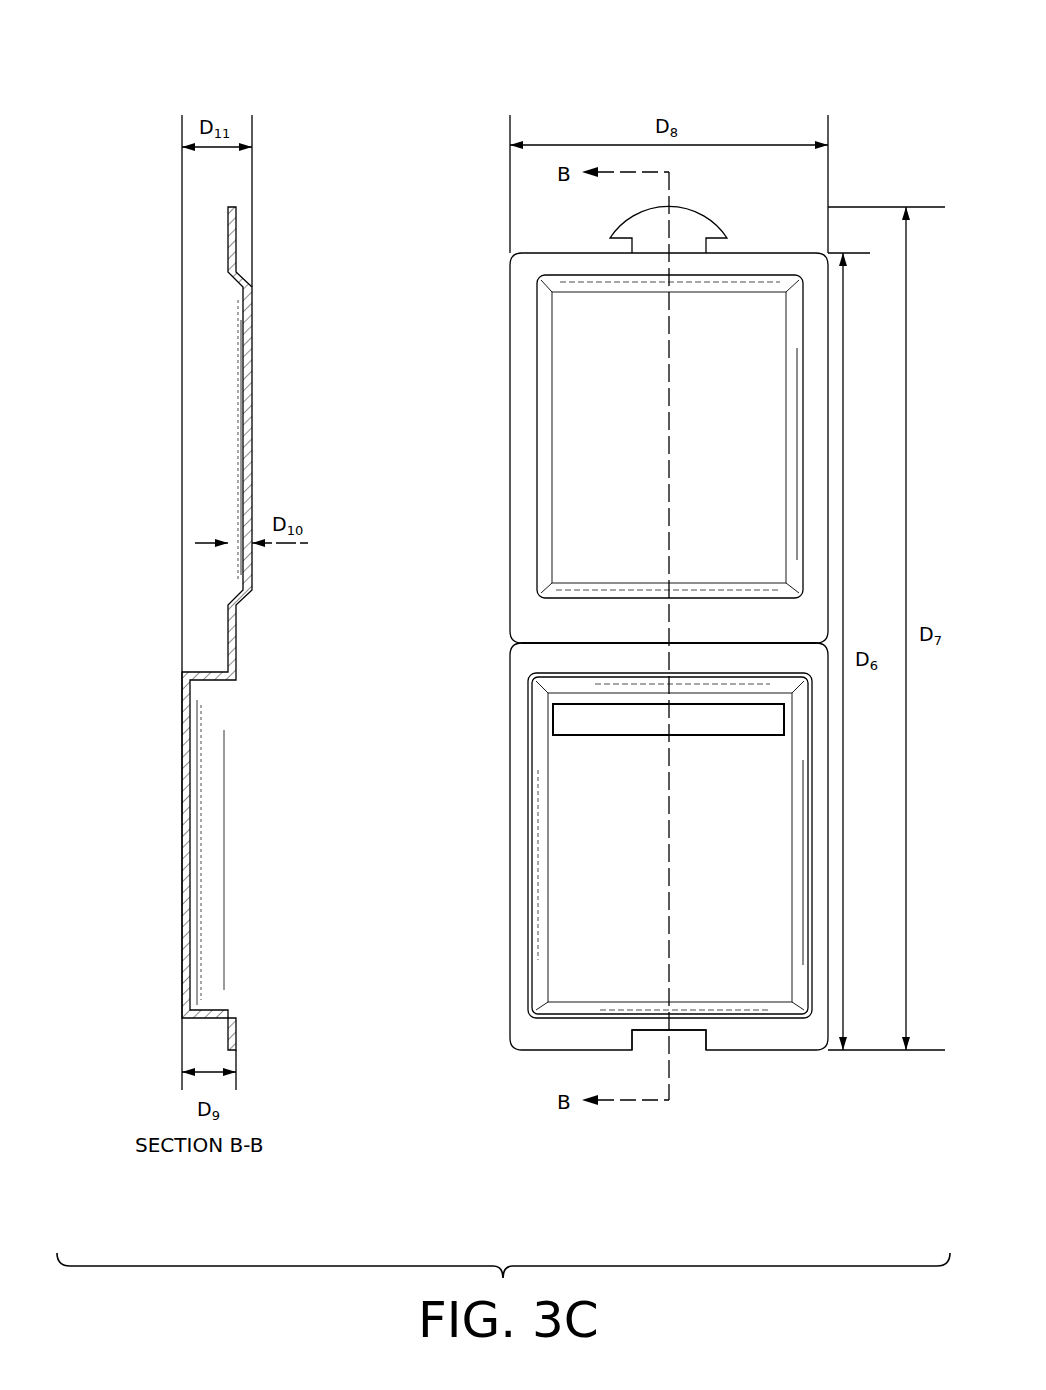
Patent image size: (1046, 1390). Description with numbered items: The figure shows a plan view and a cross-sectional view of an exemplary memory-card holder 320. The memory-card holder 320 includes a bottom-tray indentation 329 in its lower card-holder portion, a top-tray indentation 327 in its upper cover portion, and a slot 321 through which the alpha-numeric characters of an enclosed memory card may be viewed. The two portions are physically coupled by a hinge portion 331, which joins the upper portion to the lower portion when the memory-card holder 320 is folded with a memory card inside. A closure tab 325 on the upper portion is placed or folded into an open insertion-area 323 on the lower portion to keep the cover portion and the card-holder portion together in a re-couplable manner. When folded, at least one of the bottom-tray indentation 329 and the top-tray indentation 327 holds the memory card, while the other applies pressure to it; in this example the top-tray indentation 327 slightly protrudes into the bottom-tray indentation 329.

The memory-card holder 320 is at (120, 42).
The slot 321 is at (568, 720).
The open insertion-area 323 is at (682, 1040).
The closure tab 325 is at (622, 228).
The top-tray indentation 327 is at (572, 356).
The bottom-tray indentation 329 is at (566, 930).
The hinge portion 331 is at (512, 646).